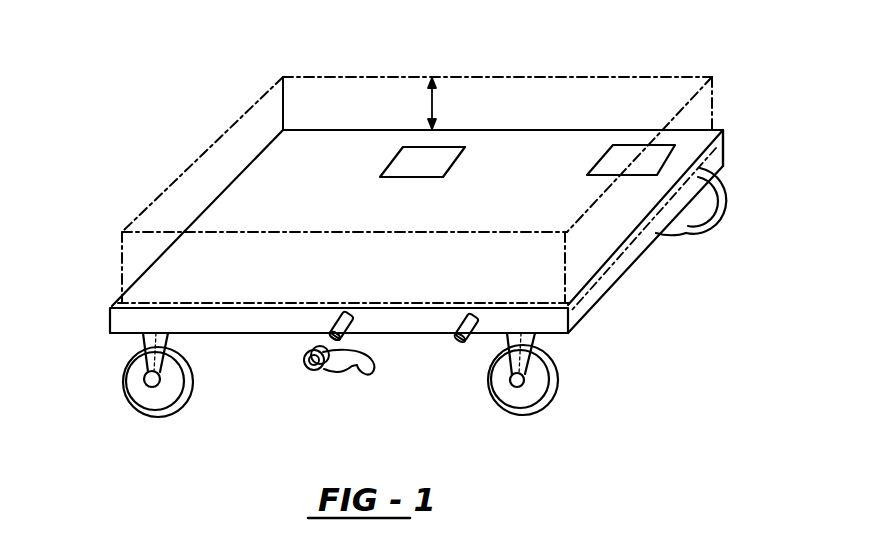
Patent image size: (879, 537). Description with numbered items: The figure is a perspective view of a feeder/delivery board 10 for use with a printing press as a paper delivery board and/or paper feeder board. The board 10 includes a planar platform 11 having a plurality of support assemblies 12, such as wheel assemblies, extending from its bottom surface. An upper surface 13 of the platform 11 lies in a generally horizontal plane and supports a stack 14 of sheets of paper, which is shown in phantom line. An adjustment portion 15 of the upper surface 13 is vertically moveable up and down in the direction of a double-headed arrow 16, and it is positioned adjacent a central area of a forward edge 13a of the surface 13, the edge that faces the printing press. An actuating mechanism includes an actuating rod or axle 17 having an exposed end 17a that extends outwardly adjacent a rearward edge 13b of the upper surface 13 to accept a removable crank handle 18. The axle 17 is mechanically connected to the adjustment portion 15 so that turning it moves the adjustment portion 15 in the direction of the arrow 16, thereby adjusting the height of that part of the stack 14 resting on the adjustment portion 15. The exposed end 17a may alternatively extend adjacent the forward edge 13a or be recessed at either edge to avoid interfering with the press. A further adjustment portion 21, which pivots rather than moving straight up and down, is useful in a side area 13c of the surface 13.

The feeder/delivery board 10 is at (90, 328).
The planar platform 11 is at (588, 294).
The support assemblies 12 is at (177, 393).
The upper surface 13 is at (623, 251).
The forward edge 13a is at (592, 128).
The rearward edge 13b is at (248, 308).
The side area 13c is at (687, 162).
The stack 14 is at (190, 167).
The adjustment portion 15 is at (437, 160).
The double-headed arrow 16 is at (440, 102).
The actuating rod or axle 17 is at (360, 333).
The exposed end 17a is at (330, 333).
The removable crank handle 18 is at (312, 370).
The adjustment portion 21 is at (653, 160).